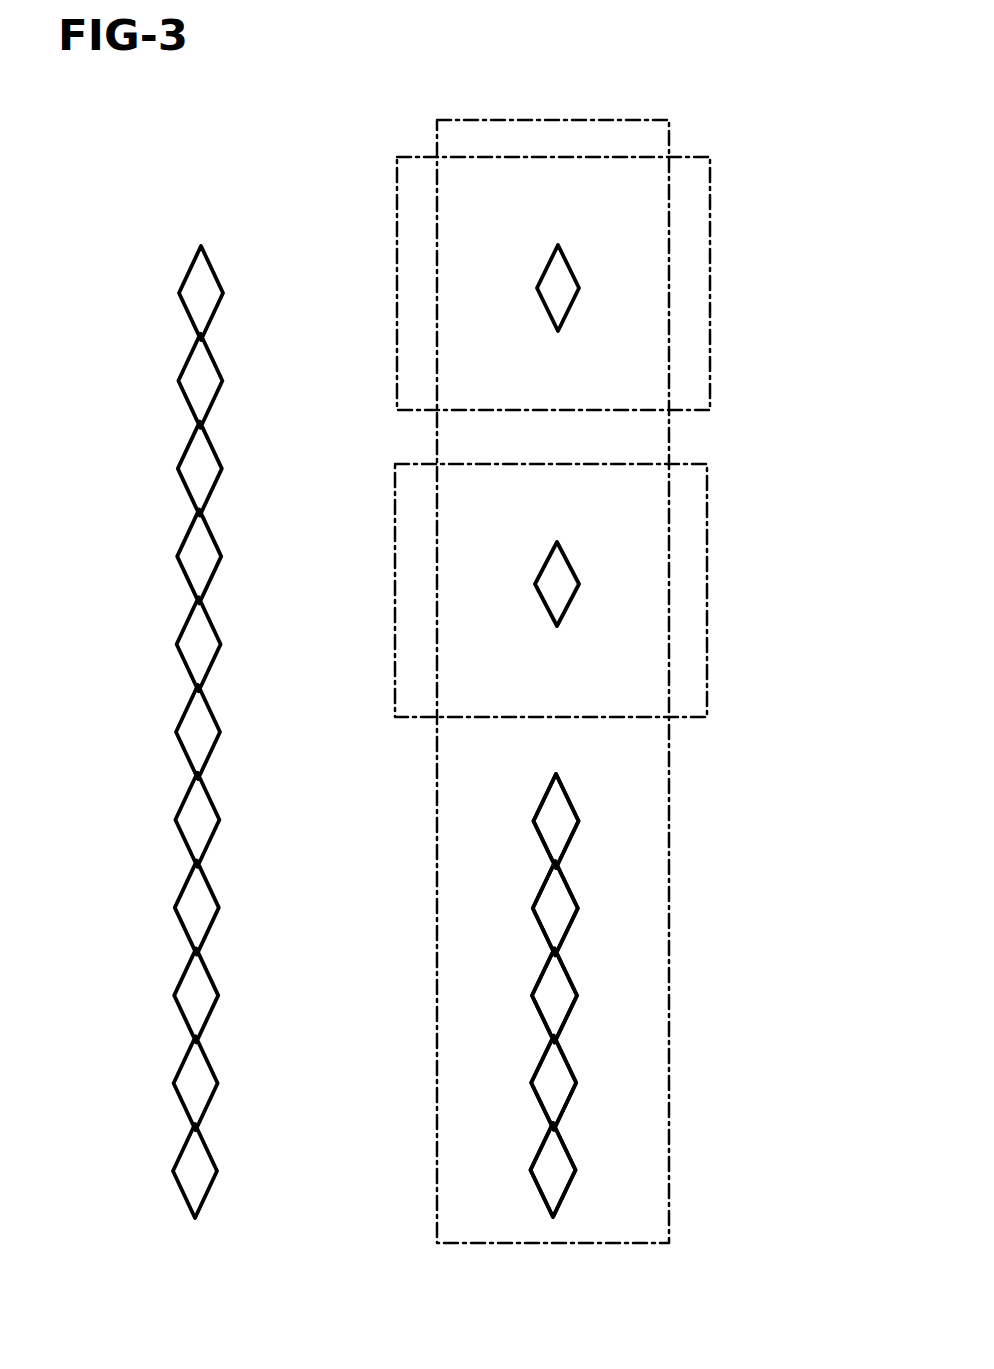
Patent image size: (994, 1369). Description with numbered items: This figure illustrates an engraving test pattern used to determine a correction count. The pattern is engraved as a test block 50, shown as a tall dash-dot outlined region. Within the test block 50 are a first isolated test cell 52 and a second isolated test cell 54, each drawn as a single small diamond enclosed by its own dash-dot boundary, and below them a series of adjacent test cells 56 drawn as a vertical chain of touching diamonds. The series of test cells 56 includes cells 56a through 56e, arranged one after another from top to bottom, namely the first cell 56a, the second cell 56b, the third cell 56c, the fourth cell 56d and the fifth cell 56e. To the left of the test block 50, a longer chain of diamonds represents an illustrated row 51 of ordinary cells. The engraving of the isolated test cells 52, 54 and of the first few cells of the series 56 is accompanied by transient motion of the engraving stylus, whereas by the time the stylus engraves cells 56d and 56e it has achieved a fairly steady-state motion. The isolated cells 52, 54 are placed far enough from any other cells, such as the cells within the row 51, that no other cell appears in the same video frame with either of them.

The test block 50 is at (668, 933).
The row 51 is at (710, 306).
The first isolated test cell 52 is at (572, 268).
The second isolated test cell 54 is at (537, 570).
The series of adjacent test cells 56 is at (512, 1020).
The first cell of the series 56a is at (567, 795).
The second cell of the series 56b is at (537, 890).
The third cell of the series 56c is at (537, 977).
The fourth cell of the series 56d is at (568, 1065).
The fifth cell of the series 56e is at (568, 1153).